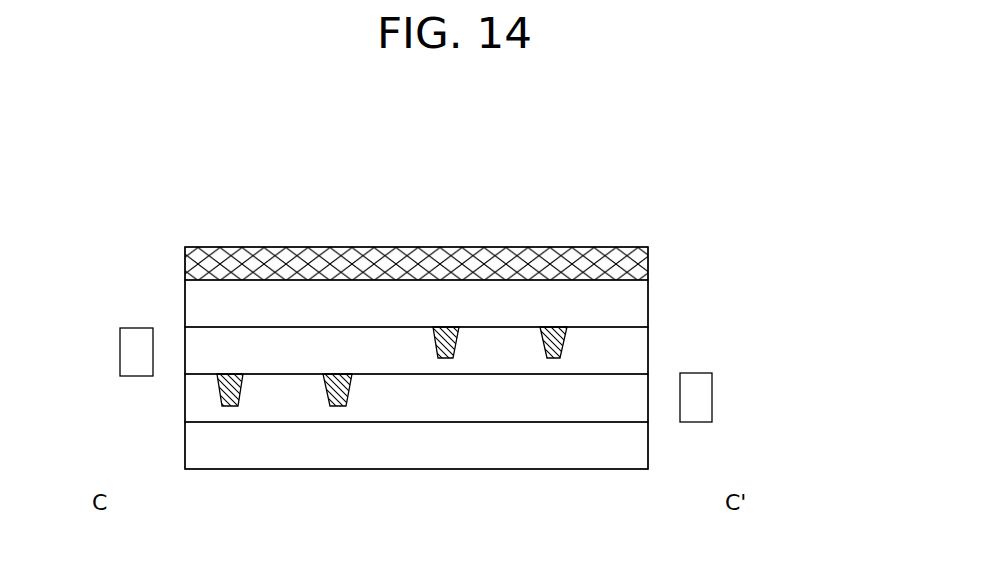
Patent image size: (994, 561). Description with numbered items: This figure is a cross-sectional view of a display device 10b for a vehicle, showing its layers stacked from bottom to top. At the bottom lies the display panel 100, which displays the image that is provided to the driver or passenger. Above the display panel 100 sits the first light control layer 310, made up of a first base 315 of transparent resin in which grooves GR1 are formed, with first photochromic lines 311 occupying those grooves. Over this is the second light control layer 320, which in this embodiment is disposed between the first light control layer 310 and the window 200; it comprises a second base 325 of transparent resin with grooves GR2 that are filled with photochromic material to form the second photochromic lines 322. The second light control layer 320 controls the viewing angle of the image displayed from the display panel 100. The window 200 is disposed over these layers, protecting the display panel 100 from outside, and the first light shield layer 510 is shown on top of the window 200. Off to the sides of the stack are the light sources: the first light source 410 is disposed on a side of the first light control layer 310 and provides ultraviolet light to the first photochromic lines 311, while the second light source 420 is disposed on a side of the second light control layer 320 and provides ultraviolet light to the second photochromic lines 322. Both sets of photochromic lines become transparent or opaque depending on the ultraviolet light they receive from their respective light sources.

The display device for a vehicle 10b is at (662, 212).
The display panel 100 is at (195, 445).
The window 200 is at (195, 308).
The first light shield layer 510 is at (195, 262).
The first light control layer 310 is at (412, 176).
The first photochromic lines 311 is at (289, 359).
The first base 315 is at (395, 385).
The second light control layer 320 is at (523, 176).
The second photochromic lines 322 is at (497, 359).
The second base 325 is at (503, 337).
The first light source 410 is at (705, 397).
The second light source 420 is at (127, 353).
The grooves GR1 is at (338, 406).
The grooves GR2 is at (443, 358).